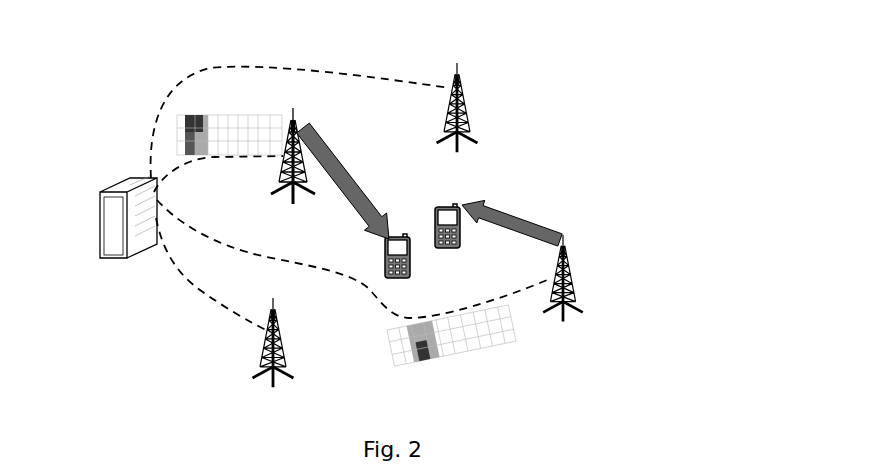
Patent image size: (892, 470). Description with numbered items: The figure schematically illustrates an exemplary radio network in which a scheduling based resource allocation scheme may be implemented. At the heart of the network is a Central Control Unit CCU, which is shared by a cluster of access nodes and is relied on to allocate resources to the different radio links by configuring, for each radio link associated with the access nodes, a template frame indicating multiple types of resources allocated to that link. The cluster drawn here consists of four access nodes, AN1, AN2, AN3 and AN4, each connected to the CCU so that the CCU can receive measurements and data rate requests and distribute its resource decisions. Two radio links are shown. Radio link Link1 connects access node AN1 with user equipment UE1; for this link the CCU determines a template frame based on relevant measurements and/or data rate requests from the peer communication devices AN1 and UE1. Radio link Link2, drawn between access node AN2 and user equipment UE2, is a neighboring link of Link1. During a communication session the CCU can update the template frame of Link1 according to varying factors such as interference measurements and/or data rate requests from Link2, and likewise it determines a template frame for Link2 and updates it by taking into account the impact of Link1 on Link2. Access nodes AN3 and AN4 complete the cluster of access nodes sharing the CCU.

The Central Control Unit CCU is at (127, 203).
The Access Node 1 AN1 is at (280, 146).
The Access Node 2 AN2 is at (585, 278).
The Access Node 3 AN3 is at (468, 107).
The Access Node 4 AN4 is at (289, 342).
The User Equipment 1 UE1 is at (396, 268).
The User Equipment 2 UE2 is at (446, 242).
The radio link 1 Link1 is at (343, 181).
The radio link 2 Link2 is at (512, 218).